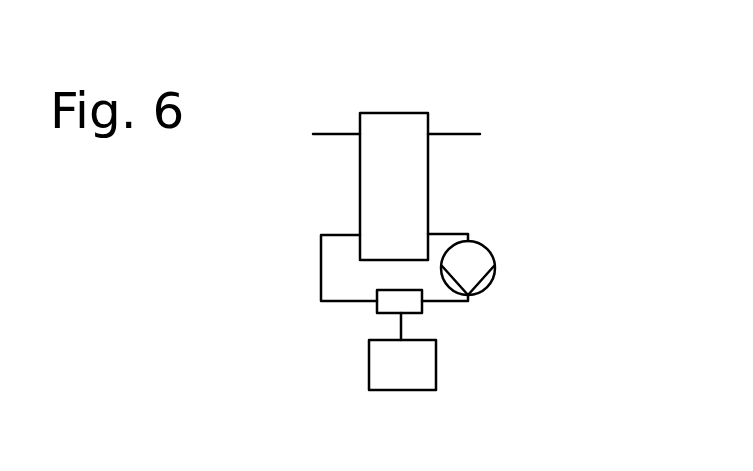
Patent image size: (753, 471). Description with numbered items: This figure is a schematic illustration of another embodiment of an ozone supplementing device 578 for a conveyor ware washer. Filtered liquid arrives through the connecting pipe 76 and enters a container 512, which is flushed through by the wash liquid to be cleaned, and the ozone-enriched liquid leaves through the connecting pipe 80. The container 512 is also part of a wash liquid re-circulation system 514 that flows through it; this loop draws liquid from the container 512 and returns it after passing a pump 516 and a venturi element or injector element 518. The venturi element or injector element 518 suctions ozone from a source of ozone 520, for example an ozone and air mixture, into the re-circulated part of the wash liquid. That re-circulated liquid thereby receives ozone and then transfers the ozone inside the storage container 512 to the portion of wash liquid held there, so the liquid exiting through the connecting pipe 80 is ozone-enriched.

The ozone supplementing device 578 is at (546, 132).
The container 512 is at (380, 132).
The connecting pipe 76 is at (351, 132).
The connecting pipe 80 is at (477, 103).
The wash liquid re-circulation system 514 is at (321, 266).
The pump 516 is at (495, 267).
The venturi element or injector element 518 is at (378, 313).
The source of ozone 520 is at (436, 358).